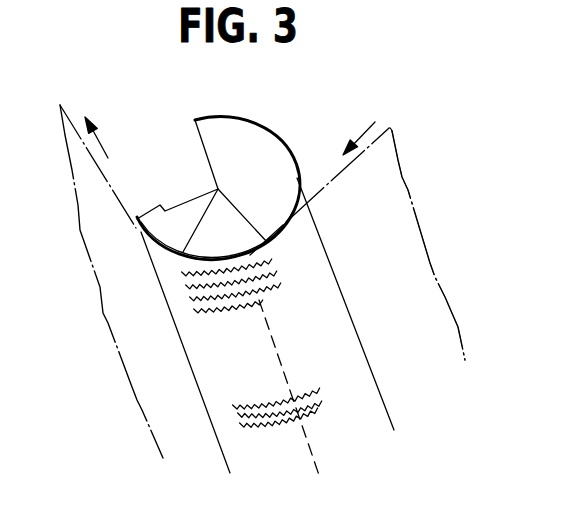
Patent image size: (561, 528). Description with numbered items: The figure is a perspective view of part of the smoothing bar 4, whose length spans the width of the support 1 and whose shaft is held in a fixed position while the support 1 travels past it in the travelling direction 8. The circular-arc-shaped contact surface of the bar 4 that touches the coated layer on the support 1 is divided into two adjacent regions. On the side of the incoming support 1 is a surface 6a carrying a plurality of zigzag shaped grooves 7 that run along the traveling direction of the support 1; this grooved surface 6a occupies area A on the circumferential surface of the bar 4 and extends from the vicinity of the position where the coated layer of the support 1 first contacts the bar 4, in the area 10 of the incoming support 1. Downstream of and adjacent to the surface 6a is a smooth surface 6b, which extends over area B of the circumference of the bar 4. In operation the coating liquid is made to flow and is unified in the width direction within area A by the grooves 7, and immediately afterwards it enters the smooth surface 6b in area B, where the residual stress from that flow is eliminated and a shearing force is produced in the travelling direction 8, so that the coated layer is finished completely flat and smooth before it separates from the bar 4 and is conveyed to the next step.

The support 1 is at (458, 327).
The smoothing bar 4 is at (284, 121).
The surface having zigzag shaped grooves 6a is at (293, 357).
The smooth surface 6b is at (233, 416).
The zigzag shaped grooves 7 is at (273, 263).
The travelling direction 8 is at (102, 144).
The area of incoming support 10 is at (268, 232).
The area A is at (247, 224).
The area B is at (151, 213).